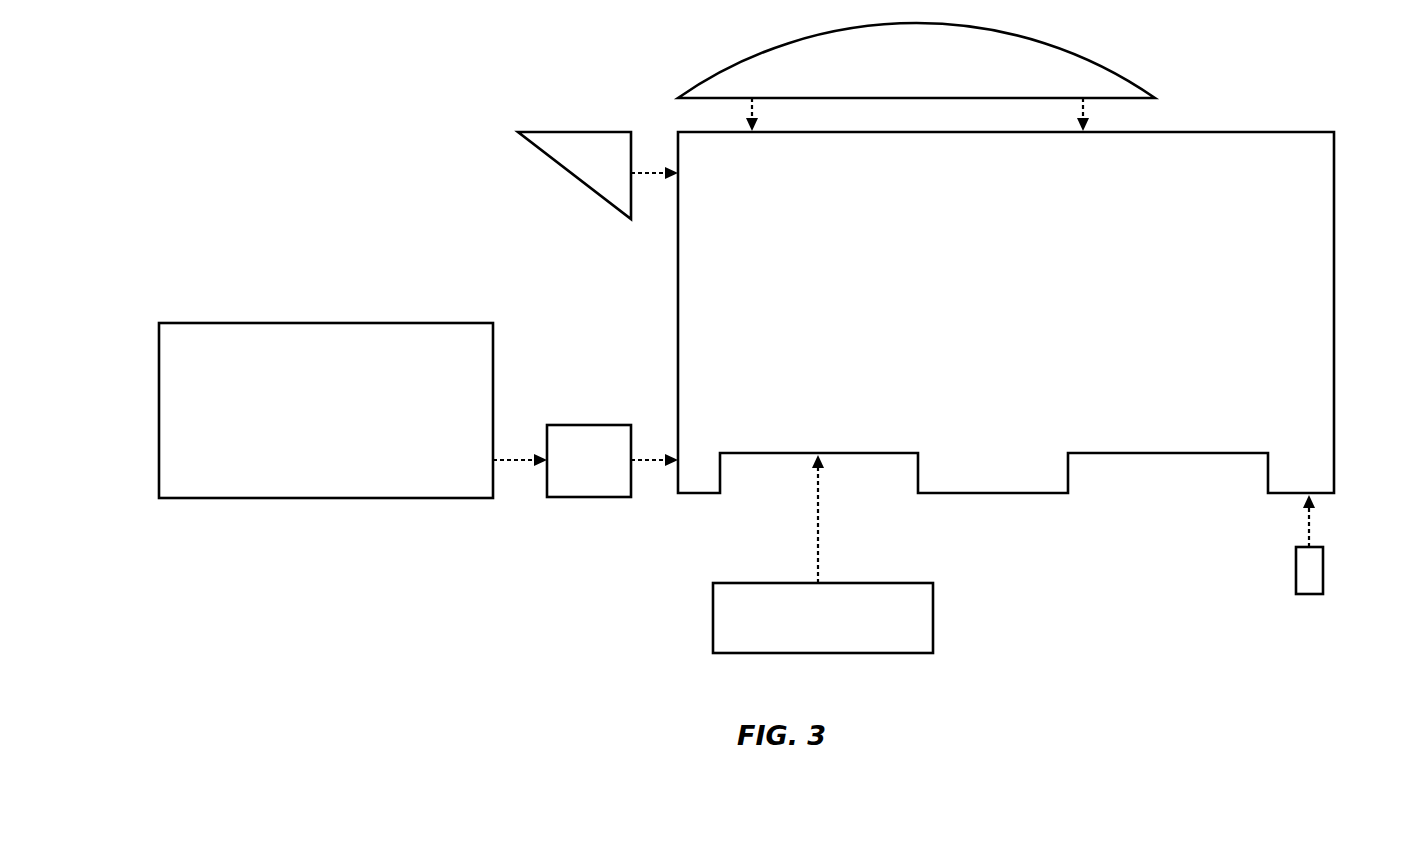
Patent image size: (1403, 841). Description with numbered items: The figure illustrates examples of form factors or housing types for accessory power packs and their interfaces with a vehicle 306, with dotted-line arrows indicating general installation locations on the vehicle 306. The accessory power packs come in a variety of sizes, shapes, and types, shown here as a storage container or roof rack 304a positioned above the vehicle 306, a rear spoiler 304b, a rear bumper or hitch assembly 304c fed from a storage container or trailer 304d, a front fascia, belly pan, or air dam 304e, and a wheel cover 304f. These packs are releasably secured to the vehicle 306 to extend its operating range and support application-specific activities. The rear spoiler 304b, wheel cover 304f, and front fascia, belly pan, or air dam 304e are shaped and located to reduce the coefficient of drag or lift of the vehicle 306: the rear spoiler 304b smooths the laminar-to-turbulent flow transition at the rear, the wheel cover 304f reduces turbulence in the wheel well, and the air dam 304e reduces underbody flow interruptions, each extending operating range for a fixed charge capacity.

The vehicle 306 is at (1335, 214).
The storage container or roof rack 304a is at (732, 57).
The rear spoiler 304b is at (584, 132).
The rear bumper or hitch assembly 304c is at (595, 424).
The storage container or trailer 304d is at (190, 322).
The front fascia, belly pan, or air dam 304e is at (1296, 560).
The wheel cover 304f is at (742, 582).